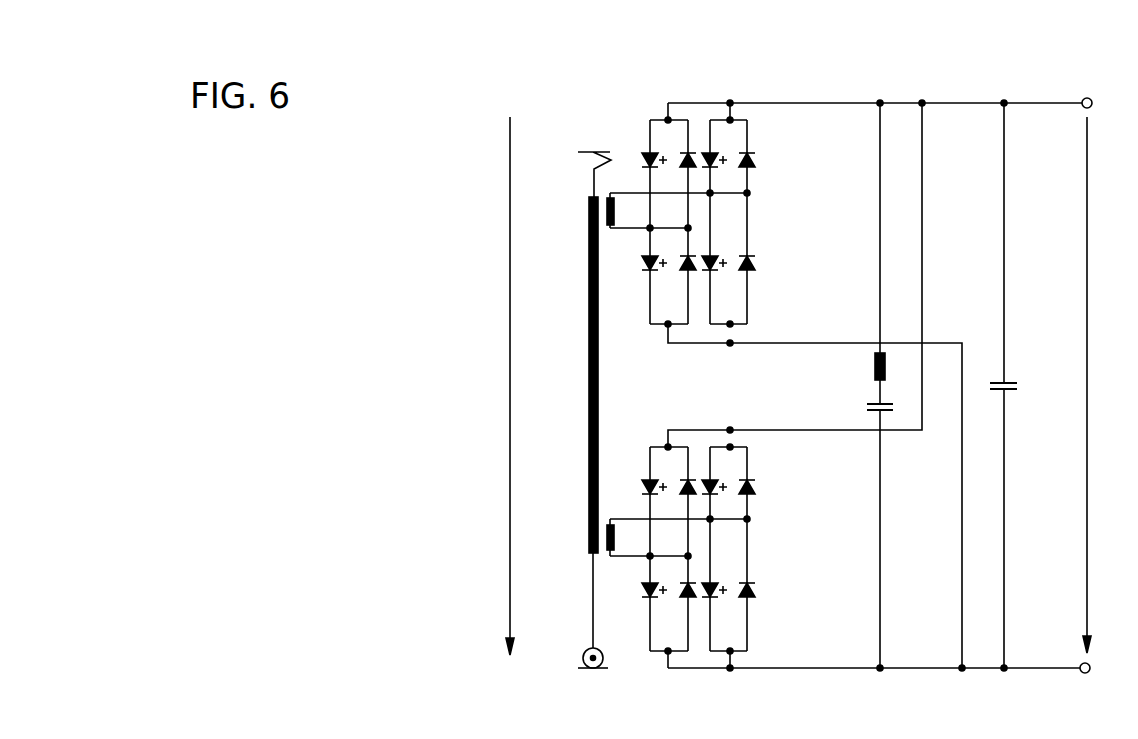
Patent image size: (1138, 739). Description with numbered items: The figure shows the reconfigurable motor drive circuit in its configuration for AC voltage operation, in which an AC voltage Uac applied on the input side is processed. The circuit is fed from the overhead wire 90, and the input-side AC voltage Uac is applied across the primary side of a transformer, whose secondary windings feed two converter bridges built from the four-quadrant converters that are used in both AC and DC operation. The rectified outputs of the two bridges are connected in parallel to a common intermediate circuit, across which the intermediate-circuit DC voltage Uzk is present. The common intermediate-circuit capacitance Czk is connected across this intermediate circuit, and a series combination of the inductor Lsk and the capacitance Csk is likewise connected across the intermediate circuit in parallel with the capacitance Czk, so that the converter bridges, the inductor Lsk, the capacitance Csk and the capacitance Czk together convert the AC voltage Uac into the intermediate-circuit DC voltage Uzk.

The overhead wire 90 is at (593, 150).
The inductor Lsk is at (859, 253).
The capacitance Csk is at (863, 530).
The intermediate-circuit capacitance Czk is at (1021, 385).
The intermediate-circuit DC voltage Uzk is at (1103, 385).
The AC voltage Uac is at (493, 386).